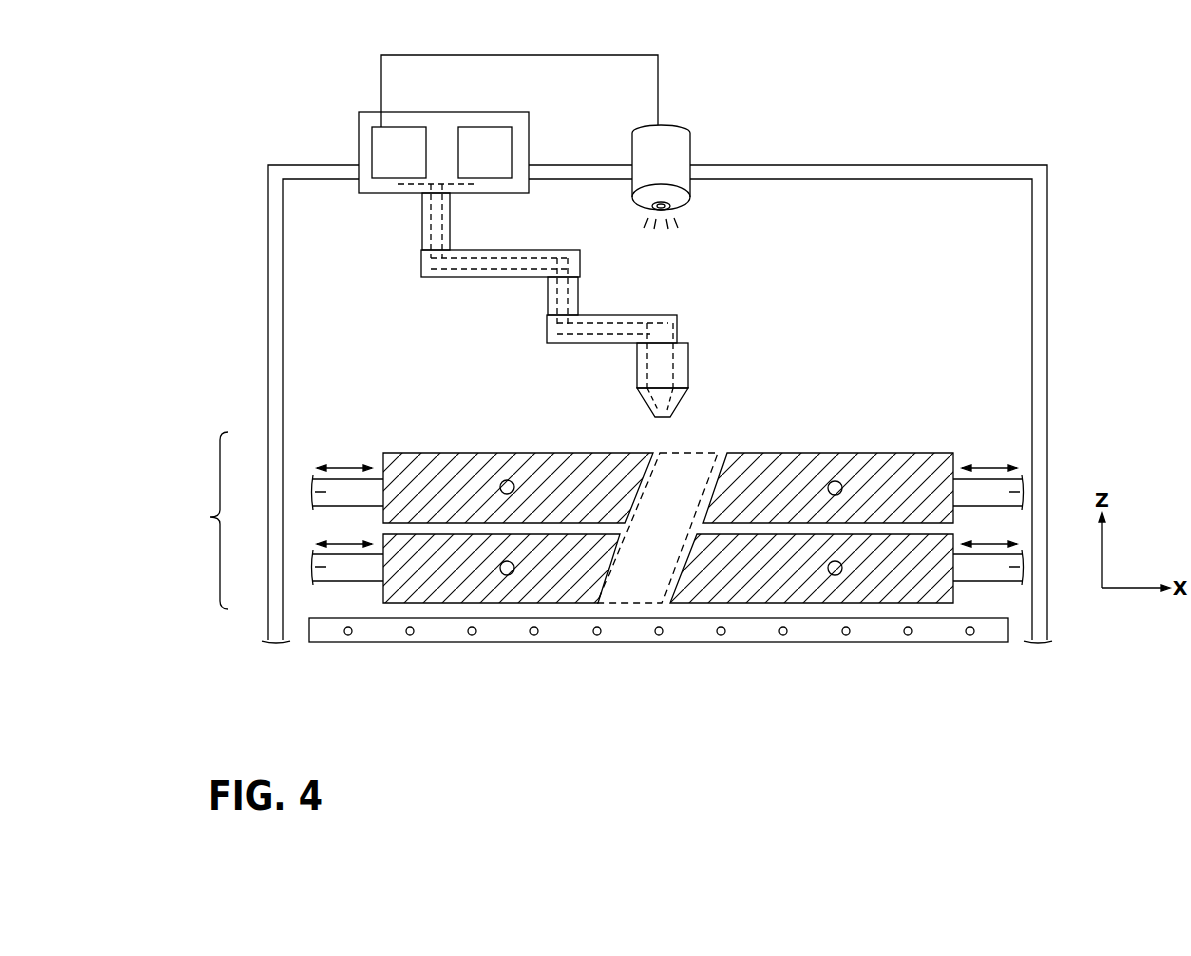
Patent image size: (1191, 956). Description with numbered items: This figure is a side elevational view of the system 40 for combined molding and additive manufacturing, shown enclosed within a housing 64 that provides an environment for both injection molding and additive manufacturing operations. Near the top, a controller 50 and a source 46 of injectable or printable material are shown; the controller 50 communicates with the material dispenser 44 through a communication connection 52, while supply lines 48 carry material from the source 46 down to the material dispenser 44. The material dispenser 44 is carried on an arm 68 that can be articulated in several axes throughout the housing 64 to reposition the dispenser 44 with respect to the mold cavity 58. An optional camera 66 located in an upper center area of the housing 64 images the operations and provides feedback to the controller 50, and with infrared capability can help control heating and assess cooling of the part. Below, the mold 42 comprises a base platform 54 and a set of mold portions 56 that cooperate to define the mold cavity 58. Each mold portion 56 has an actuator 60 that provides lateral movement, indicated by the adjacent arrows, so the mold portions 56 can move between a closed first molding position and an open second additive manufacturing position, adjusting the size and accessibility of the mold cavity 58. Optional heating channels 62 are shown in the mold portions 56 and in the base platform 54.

The system 40 is at (840, 100).
The mold 42 is at (203, 529).
The material dispenser 44 is at (690, 375).
The source of material 46 is at (473, 127).
The supply lines 48 is at (500, 253).
The controller 50 is at (402, 127).
The communication connection 52 is at (421, 233).
The base platform 54 is at (690, 636).
The mold portions 56 is at (878, 453).
The mold cavity 58 is at (650, 541).
The actuator 60 is at (312, 490).
The heating channels 62 is at (500, 487).
The housing 64 is at (985, 162).
The camera 66 is at (691, 140).
The arm 68 is at (515, 277).